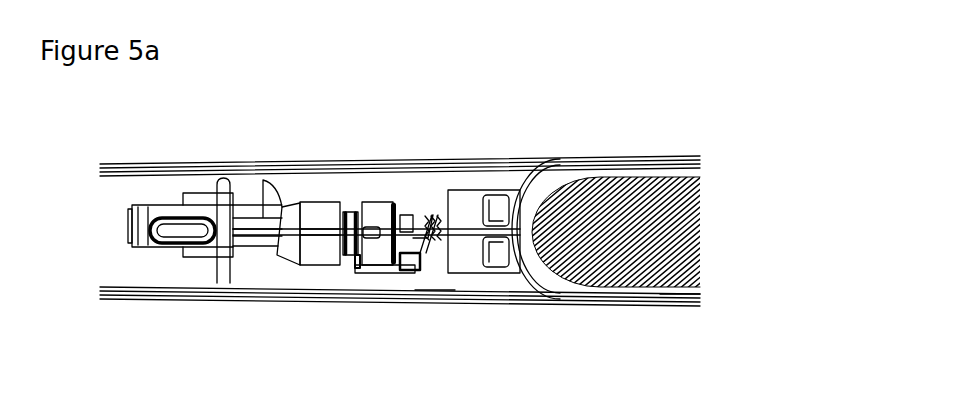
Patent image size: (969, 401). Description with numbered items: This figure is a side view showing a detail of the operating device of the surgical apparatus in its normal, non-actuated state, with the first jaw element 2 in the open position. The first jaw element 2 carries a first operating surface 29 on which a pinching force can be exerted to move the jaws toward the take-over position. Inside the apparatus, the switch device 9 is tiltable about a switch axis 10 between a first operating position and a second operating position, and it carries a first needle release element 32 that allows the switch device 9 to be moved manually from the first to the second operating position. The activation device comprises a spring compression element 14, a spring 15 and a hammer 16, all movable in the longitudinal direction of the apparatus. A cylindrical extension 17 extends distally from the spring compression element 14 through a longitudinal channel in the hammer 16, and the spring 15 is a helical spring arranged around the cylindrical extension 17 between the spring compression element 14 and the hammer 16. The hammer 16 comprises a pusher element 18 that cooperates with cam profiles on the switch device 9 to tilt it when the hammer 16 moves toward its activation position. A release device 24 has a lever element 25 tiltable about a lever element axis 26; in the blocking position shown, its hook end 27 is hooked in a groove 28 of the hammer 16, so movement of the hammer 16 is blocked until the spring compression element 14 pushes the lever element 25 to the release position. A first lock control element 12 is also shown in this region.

The first jaw element 2 is at (587, 187).
The switch device 9 is at (213, 212).
The switch axis 10 is at (222, 270).
The first lock control element 12 is at (457, 237).
The spring compression element 14 is at (465, 190).
The spring 15 is at (423, 190).
The hammer 16 is at (333, 190).
The cylindrical extension 17 is at (405, 190).
The pusher element 18 is at (265, 183).
The release device 24 is at (431, 281).
The lever element 25 is at (383, 273).
The lever element axis 26 is at (418, 263).
The hook end of lever element 27 is at (356, 258).
The groove 28 is at (350, 257).
The first operating surface 29 is at (672, 265).
The first needle release element 32 is at (165, 232).